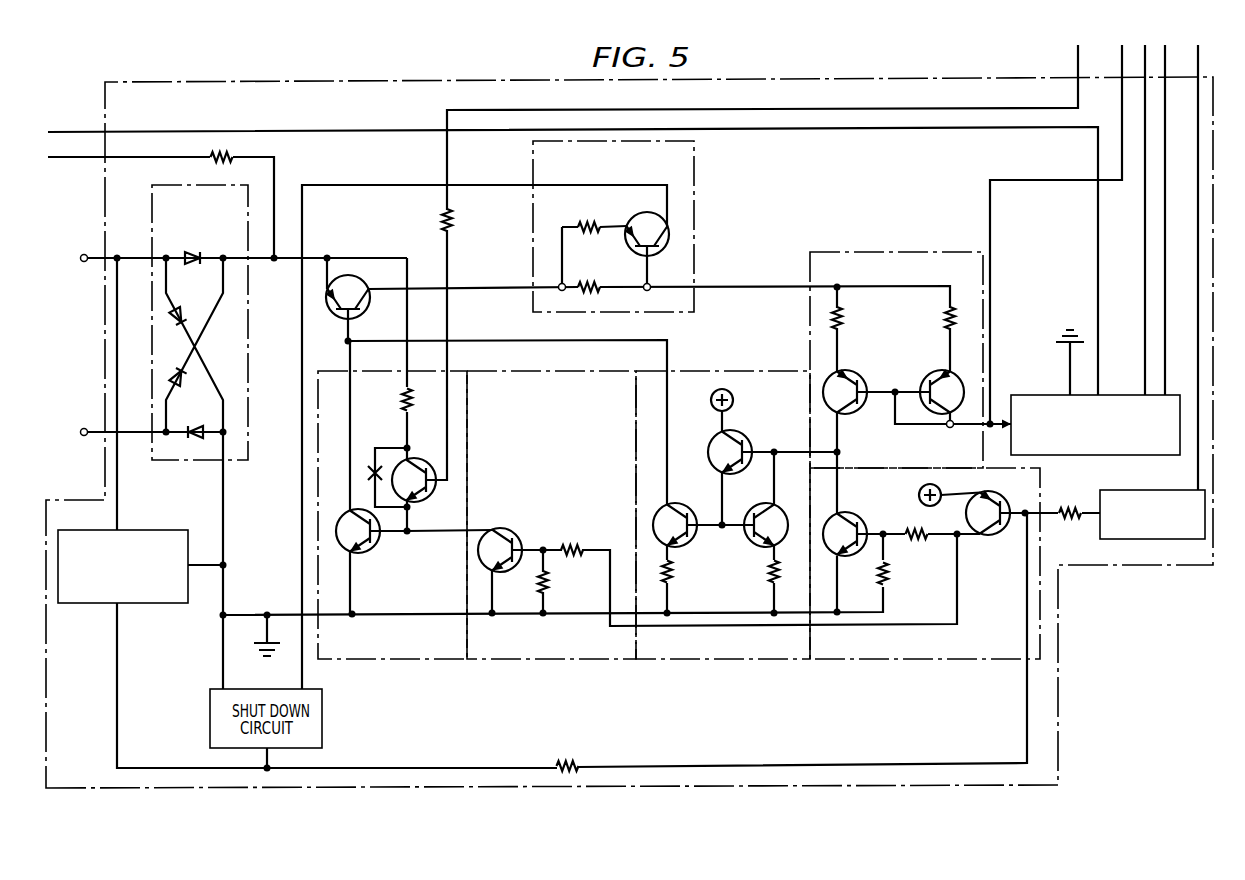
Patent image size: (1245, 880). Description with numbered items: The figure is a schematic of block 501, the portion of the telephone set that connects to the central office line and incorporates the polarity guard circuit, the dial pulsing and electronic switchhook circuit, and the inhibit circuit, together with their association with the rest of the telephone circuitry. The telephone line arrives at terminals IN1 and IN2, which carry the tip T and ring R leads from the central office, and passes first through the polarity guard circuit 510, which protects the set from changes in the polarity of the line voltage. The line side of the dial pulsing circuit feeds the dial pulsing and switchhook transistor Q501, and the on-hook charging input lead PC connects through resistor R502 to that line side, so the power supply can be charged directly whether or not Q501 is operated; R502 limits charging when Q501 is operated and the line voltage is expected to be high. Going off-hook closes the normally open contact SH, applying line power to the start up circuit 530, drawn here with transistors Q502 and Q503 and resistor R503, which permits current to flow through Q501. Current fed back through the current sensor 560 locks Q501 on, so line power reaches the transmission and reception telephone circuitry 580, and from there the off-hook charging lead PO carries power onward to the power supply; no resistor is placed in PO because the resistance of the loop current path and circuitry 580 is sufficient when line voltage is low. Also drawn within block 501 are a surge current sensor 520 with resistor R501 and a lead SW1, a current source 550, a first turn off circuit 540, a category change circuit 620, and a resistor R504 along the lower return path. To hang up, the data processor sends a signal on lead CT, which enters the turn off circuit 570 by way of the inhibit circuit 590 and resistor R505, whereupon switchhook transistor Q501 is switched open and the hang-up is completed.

The block 501 is at (320, 65).
The polarity guard circuit 510 is at (151, 228).
The surge current sensor 520 is at (695, 186).
The start up circuit 530 is at (392, 479).
The turn off circuit-1 540 is at (563, 660).
The current source 550 is at (738, 660).
The current sensor 560 is at (897, 250).
The turn off circuit 570 is at (918, 658).
The transmission and reception telephone circuitry 580 is at (1047, 393).
The inhibit circuit 590 is at (1102, 499).
The category change circuit 620 is at (172, 528).
The resistor R501 is at (467, 220).
The resistor R502 is at (220, 168).
The resistor R503 is at (387, 401).
The resistor R504 is at (565, 753).
The resistor R505 is at (1066, 501).
The dial pulsing and switchhook transistor Q501 is at (360, 299).
The transistor Q502 is at (424, 490).
The transistor Q503 is at (371, 478).
The normally open contact SH is at (368, 465).
The switch signal line SW1 is at (1076, 56).
The lead CT is at (1199, 57).
The off-hook charging input lead PO is at (165, 131).
The on-hook charging input lead PC is at (165, 161).
The terminal IN1 is at (84, 262).
The terminal IN2 is at (86, 428).
The ring lead R is at (96, 255).
The tip lead T is at (88, 436).